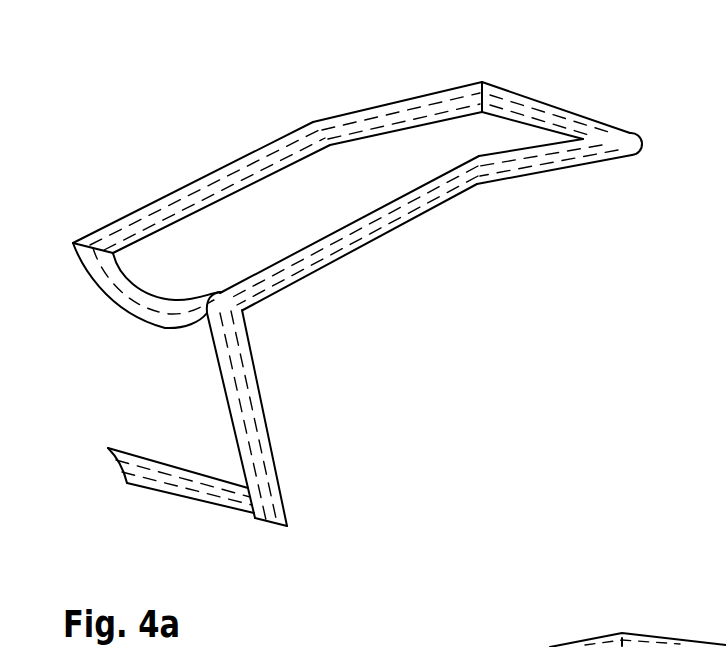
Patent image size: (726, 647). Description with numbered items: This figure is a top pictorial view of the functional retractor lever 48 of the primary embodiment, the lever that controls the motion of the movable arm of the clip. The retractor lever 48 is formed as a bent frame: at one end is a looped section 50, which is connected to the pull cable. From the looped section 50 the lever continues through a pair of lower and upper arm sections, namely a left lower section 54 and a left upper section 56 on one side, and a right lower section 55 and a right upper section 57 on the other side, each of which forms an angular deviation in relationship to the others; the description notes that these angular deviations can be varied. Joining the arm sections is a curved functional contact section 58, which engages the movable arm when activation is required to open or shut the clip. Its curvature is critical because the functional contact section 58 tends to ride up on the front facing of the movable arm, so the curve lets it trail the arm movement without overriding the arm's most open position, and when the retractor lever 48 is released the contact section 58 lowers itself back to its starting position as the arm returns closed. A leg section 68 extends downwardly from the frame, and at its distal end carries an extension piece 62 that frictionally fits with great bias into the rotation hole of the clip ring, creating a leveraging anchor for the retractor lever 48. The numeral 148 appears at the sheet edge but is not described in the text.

The functional retractor lever 48 is at (193, 98).
The looped section 50 is at (563, 112).
The left lower section 54 is at (572, 168).
The right lower section 55 is at (373, 110).
The left upper section 56 is at (337, 257).
The right upper section 57 is at (173, 193).
The curved functional contact section 58 is at (120, 303).
The extension piece 62 is at (106, 458).
The leg section 68 is at (267, 435).
The frame member 148 is at (336, 646).